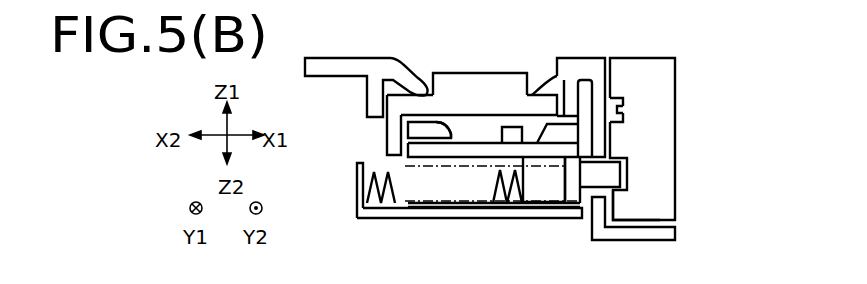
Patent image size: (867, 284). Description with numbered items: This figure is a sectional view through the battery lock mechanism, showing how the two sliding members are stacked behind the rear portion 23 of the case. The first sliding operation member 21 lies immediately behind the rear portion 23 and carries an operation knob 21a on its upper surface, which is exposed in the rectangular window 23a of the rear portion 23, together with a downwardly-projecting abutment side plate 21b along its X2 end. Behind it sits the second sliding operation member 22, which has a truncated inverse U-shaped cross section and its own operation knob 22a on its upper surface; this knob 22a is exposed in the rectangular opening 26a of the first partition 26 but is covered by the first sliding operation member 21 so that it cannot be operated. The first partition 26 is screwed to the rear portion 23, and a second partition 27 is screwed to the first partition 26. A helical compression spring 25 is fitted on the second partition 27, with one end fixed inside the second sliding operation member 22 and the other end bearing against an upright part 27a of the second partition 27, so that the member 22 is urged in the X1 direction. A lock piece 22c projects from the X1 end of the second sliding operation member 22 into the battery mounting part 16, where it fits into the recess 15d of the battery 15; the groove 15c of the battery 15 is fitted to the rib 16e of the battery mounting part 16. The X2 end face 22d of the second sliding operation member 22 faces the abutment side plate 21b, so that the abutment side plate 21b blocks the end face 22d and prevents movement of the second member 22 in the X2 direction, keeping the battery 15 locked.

The battery 15 is at (653, 72).
The groove 15c is at (617, 128).
The recess 15d is at (613, 208).
The battery mounting part 16 is at (642, 213).
The rib 16e is at (623, 110).
The first sliding operation member 21 is at (480, 92).
The operation knob 21a is at (445, 80).
The abutment side plate 21b is at (386, 137).
The second sliding operation member 22 is at (476, 157).
The operation knob 22a is at (557, 165).
The lock piece 22c is at (615, 178).
The X2 end face 22d is at (408, 150).
The rear portion of the case 23 is at (336, 63).
The rectangular window 23a is at (537, 80).
The helical compression spring 25 is at (380, 190).
The first partition 26 is at (612, 80).
The rectangular opening 26a is at (450, 138).
The second partition 27 is at (466, 209).
The upright part 27a is at (357, 176).